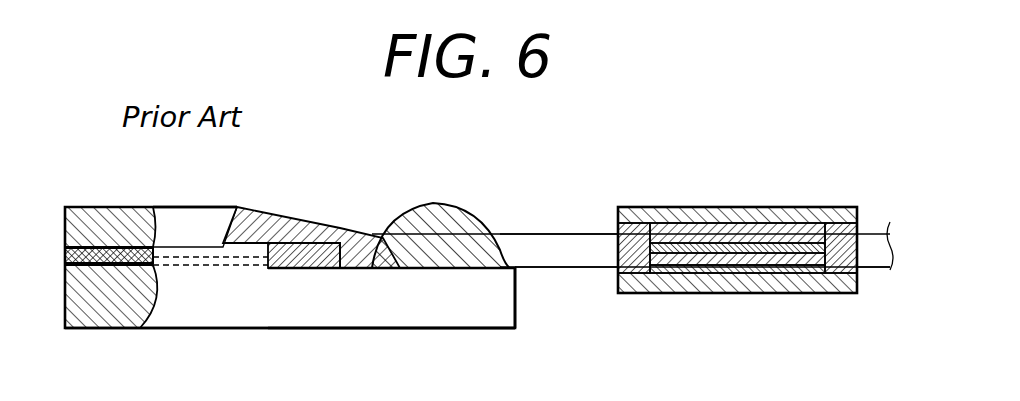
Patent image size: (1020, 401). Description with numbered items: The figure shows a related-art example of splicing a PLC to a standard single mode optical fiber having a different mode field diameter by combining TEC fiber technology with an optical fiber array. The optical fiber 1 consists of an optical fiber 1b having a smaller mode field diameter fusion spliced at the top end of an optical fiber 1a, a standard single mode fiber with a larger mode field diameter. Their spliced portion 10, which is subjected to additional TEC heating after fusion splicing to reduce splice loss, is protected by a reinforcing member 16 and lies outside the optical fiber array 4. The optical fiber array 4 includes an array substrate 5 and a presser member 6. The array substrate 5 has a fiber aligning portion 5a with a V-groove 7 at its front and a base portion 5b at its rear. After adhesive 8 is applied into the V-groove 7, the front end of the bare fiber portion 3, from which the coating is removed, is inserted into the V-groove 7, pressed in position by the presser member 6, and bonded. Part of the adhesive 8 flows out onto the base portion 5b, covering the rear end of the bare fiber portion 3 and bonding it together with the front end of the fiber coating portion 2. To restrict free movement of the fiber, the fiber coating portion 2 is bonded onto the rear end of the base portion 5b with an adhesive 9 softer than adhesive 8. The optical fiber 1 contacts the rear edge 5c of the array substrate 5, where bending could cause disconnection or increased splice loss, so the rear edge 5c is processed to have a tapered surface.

The optical fiber 1 is at (517, 228).
The optical fiber 1a is at (873, 274).
The optical fiber 1b is at (582, 276).
The fiber coating portion 2 is at (587, 247).
The bare fiber portion 3 is at (285, 226).
The optical fiber array 4 is at (180, 344).
The array substrate 5 is at (283, 322).
The fiber aligning portion 5a is at (90, 328).
The base portion 5b is at (393, 268).
The rear edge 5c is at (517, 270).
The presser member 6 is at (167, 222).
The V-groove 7 is at (75, 270).
The adhesive 8 is at (107, 252).
The adhesive 9 is at (423, 203).
The spliced portion 10 is at (765, 273).
The reinforcing member 16 is at (800, 212).